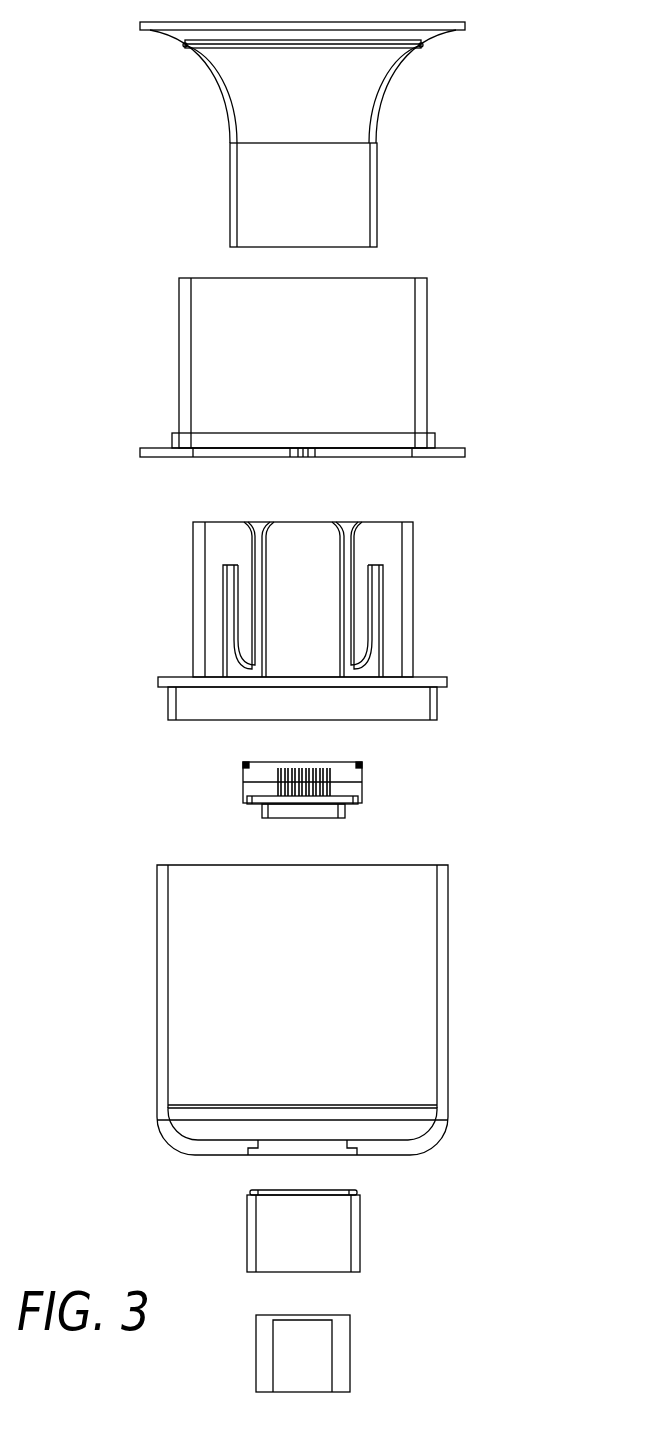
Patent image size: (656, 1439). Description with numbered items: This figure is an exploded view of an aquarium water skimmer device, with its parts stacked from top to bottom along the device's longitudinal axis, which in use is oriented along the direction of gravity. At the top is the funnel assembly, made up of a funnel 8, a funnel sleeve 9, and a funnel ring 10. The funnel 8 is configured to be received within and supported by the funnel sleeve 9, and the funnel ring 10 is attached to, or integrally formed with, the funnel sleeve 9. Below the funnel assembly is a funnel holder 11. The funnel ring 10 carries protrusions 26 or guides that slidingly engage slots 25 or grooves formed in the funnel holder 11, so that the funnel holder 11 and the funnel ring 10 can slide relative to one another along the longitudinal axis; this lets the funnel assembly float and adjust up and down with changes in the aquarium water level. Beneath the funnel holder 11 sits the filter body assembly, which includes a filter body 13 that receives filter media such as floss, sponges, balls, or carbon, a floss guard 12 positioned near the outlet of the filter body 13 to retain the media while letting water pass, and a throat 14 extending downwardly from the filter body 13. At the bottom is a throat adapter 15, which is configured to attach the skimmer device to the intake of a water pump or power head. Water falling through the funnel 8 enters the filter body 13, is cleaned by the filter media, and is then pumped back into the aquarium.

The funnel 8 is at (409, 186).
The funnel sleeve 9 is at (451, 332).
The funnel ring 10 is at (367, 471).
The protrusions 26 is at (315, 470).
The funnel holder 11 is at (362, 621).
The slots 25 is at (370, 580).
The floss guard 12 is at (388, 785).
The filter body 13 is at (463, 983).
The throat 14 is at (383, 1224).
The throat adapter 15 is at (373, 1361).